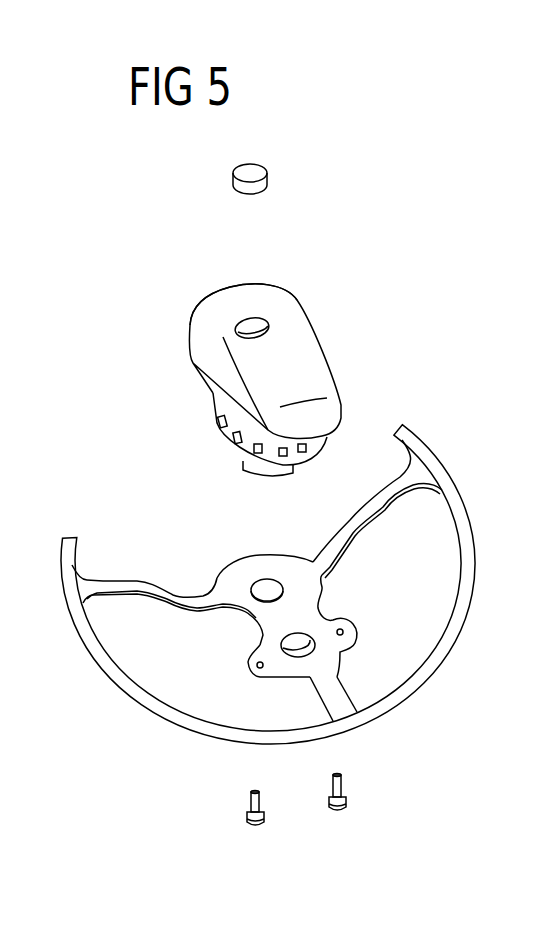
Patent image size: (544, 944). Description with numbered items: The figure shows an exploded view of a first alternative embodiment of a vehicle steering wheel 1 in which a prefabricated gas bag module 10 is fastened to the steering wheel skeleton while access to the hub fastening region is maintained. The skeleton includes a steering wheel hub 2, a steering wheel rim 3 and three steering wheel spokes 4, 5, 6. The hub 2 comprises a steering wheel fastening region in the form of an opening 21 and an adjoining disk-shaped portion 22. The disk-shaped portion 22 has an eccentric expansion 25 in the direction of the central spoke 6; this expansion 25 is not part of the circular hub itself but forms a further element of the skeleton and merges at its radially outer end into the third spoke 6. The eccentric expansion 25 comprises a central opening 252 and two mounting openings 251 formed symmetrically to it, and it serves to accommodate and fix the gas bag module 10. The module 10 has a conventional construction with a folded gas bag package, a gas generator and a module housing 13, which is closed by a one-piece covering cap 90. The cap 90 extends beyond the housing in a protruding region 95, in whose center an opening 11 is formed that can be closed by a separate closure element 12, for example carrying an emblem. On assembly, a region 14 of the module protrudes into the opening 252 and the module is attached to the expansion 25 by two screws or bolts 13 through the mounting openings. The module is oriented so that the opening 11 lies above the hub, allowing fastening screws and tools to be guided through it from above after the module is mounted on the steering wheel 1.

The steering wheel 1 is at (293, 586).
The steering wheel hub 2 is at (257, 605).
The steering wheel rim 3 is at (470, 598).
The steering wheel spoke 4 is at (165, 608).
The steering wheel spoke 5 is at (378, 510).
The central steering wheel spoke 6 is at (342, 680).
The gas bag module 10 is at (270, 550).
The opening 11 is at (265, 320).
The closure element 12 is at (268, 167).
The module housing / screws or bolts 13 is at (320, 447).
The region of the gas bag module 14 is at (248, 463).
The opening (steering wheel fastening region) 21 is at (250, 590).
The disk-shaped portion 22 is at (278, 556).
The eccentric expansion 25 is at (290, 673).
The covering cap 90 is at (328, 358).
The protruding region 95 is at (225, 305).
The mounting openings 251 is at (258, 667).
The central opening 252 is at (315, 640).